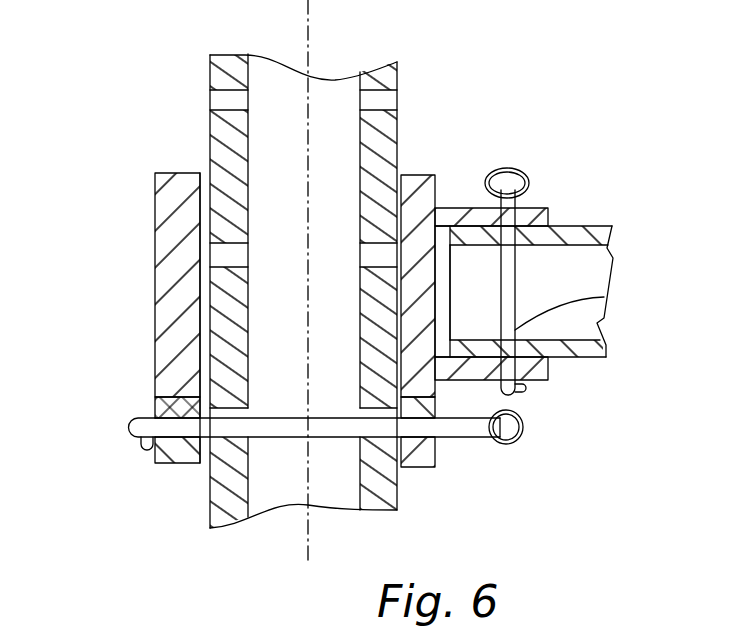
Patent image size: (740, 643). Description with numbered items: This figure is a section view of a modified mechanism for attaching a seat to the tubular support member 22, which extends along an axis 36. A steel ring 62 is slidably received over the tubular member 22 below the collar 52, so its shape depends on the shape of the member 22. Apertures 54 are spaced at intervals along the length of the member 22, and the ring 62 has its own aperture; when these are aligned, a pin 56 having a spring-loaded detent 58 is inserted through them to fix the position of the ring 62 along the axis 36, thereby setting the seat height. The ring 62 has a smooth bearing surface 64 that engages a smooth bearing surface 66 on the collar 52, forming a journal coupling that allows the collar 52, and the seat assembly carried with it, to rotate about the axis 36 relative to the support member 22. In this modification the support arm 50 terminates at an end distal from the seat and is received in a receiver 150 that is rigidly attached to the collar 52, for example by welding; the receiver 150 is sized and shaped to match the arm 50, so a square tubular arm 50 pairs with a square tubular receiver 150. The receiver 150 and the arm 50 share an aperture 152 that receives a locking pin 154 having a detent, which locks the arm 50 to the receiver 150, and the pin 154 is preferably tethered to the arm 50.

The tubular member 22 is at (210, 162).
The axis 36 is at (312, 50).
The support arm 50 is at (600, 226).
The collar 52 is at (425, 175).
The apertures 54 is at (210, 103).
The pin 56 is at (452, 440).
The spring-loaded detent 58 is at (140, 447).
The steel ring 62 is at (165, 463).
The bearing surface 64 is at (163, 398).
The bearing surface 66 is at (130, 428).
The receiver 150 is at (526, 390).
The aperture 152 is at (520, 225).
The locking pin 154 is at (518, 328).